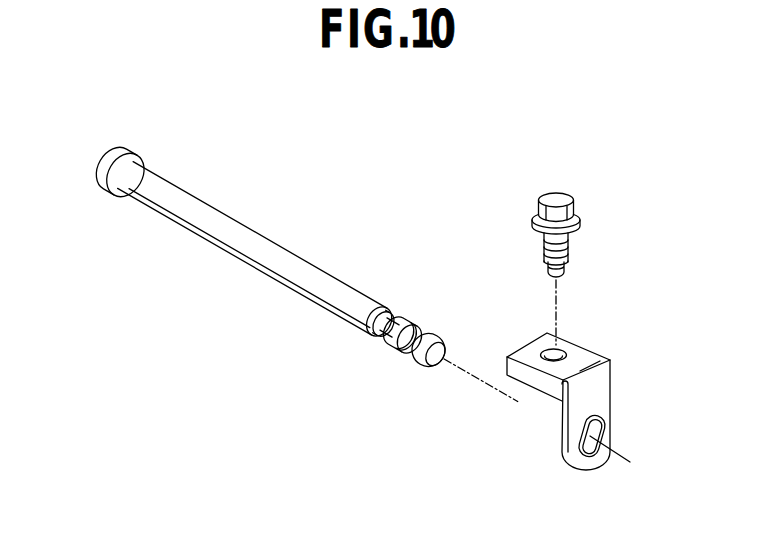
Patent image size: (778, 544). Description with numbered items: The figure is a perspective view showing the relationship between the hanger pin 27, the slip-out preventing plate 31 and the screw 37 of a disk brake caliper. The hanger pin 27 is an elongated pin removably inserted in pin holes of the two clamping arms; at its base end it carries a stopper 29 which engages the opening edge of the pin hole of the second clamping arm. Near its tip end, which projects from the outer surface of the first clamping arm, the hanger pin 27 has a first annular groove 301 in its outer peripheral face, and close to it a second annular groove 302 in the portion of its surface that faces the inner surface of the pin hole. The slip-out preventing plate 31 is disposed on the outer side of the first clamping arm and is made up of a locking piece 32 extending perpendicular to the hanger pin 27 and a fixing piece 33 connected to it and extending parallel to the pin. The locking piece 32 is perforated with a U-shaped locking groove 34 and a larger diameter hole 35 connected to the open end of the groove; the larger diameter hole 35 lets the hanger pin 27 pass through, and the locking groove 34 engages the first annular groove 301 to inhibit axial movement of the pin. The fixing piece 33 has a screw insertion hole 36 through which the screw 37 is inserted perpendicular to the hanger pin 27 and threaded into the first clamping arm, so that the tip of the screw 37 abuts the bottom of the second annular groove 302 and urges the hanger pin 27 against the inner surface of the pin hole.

The hanger pin 27 is at (242, 224).
The stopper 29 is at (116, 149).
The first annular groove 301 is at (423, 330).
The second annular groove 302 is at (393, 318).
The slip-out preventing plate 31 is at (585, 402).
The locking piece 32 is at (618, 441).
The fixing piece 33 is at (551, 342).
The locking groove 34 is at (596, 418).
The larger diameter hole 35 is at (584, 453).
The screw insertion hole 36 is at (547, 352).
The screw 37 is at (556, 200).